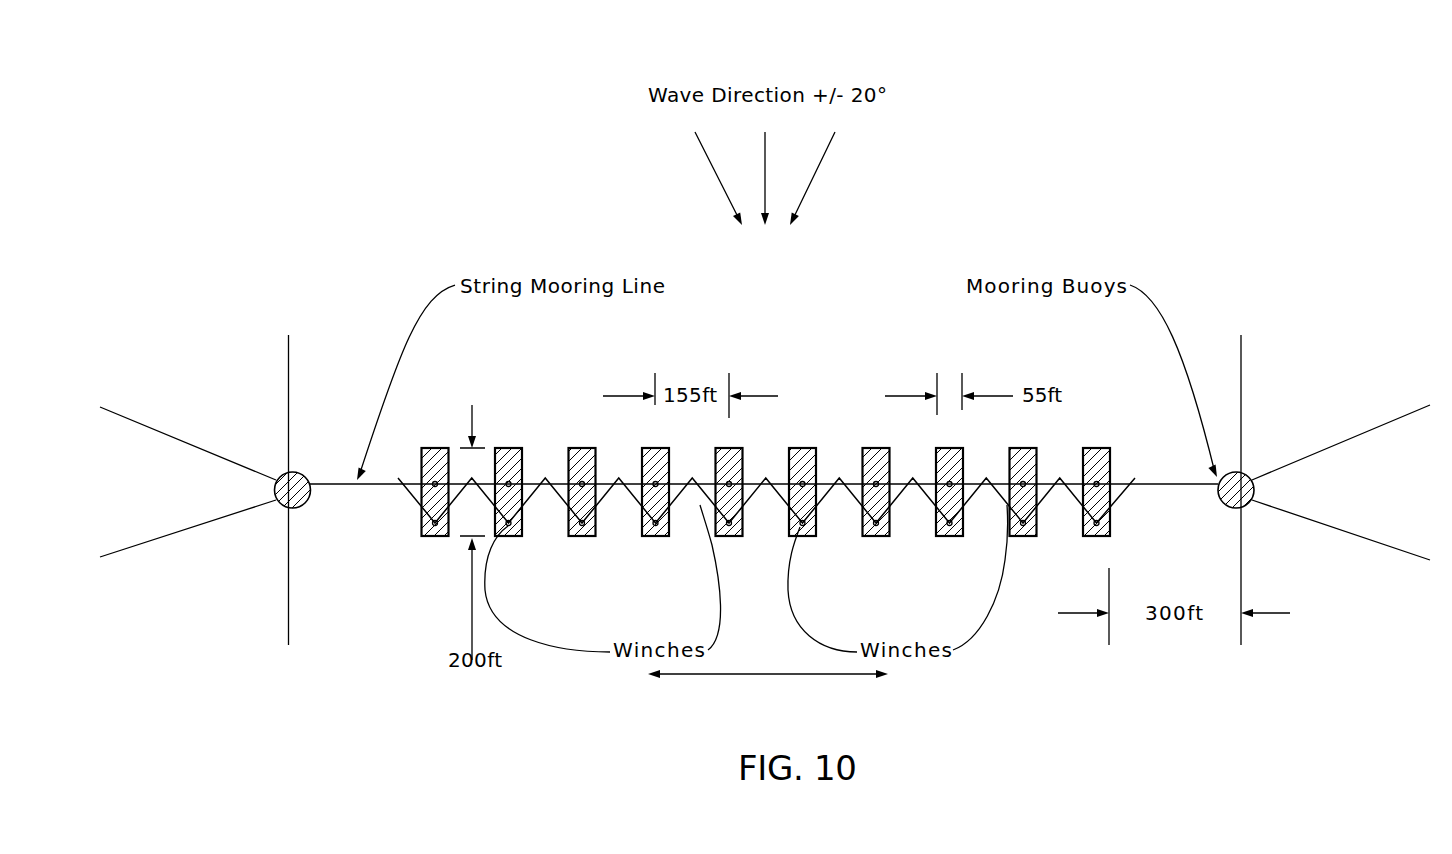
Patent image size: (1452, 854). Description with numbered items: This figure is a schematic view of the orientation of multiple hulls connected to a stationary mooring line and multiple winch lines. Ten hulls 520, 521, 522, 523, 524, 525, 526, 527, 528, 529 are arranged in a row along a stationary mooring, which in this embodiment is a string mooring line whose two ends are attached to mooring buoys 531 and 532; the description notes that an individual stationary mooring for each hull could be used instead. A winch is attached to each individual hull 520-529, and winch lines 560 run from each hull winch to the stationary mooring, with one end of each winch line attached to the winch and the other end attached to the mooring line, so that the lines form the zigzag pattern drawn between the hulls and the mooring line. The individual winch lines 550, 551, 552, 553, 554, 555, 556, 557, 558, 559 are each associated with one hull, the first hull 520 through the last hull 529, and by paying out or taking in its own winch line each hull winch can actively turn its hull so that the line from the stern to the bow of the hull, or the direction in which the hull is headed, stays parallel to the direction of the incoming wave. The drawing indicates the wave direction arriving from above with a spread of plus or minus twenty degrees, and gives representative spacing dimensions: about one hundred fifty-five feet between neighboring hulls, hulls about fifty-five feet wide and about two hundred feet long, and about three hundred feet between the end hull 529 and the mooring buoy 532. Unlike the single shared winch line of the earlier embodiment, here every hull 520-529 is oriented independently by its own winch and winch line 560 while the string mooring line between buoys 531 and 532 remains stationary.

The hull 520 is at (448, 448).
The hull 521 is at (522, 448).
The hull 522 is at (595, 448).
The hull 523 is at (668, 448).
The hull 524 is at (742, 448).
The hull 525 is at (816, 448).
The hull 526 is at (889, 448).
The hull 527 is at (962, 448).
The hull 528 is at (1036, 448).
The hull 529 is at (1110, 448).
The buoy 531 is at (306, 476).
The buoy 532 is at (1292, 455).
The winch line 550 is at (421, 537).
The winch line 551 is at (526, 524).
The winch line 552 is at (599, 524).
The winch line 553 is at (672, 524).
The winch line 554 is at (746, 524).
The winch line 555 is at (820, 524).
The winch line 556 is at (893, 524).
The winch line 557 is at (966, 524).
The winch line 558 is at (1040, 524).
The winch line 559 is at (1111, 537).
The winch lines 560 is at (412, 496).